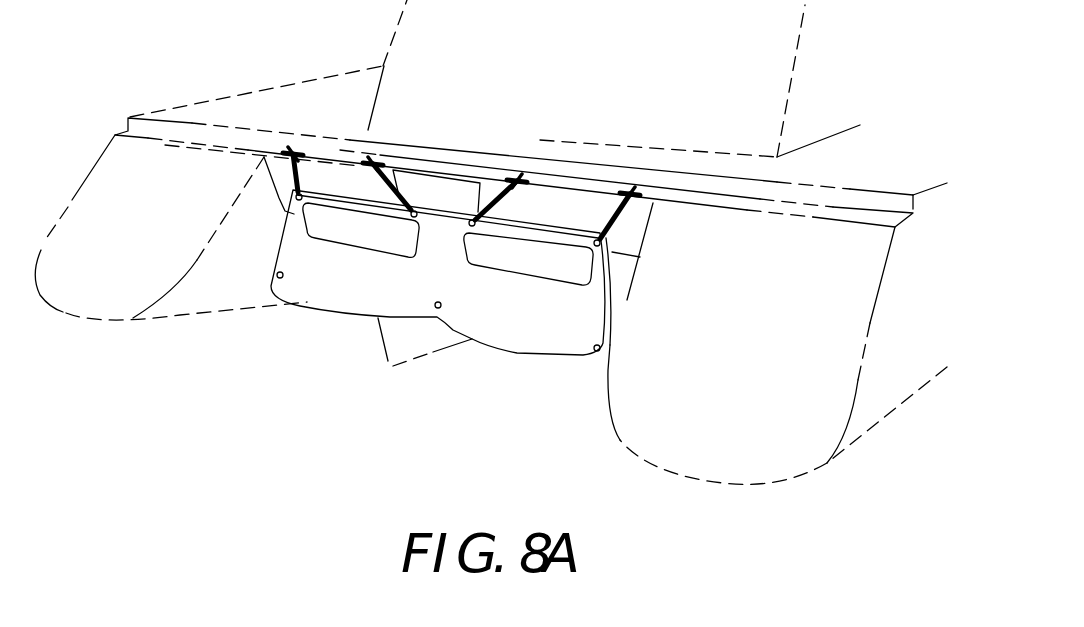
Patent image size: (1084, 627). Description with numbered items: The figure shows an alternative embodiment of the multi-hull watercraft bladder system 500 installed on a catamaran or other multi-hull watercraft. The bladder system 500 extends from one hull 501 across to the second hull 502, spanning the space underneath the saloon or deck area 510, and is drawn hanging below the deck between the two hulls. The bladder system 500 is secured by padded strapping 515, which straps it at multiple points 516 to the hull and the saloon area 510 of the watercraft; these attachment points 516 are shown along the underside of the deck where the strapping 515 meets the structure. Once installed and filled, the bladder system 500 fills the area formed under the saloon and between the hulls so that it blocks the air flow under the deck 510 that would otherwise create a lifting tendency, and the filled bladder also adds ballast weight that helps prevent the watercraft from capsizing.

The multi-hull watercraft bladder system 500 is at (503, 338).
The hull 501 is at (122, 312).
The second hull 502 is at (723, 463).
The saloon or deck area 510 is at (320, 140).
The padded strapping 515 is at (294, 186).
The multiple points 516 is at (290, 148).